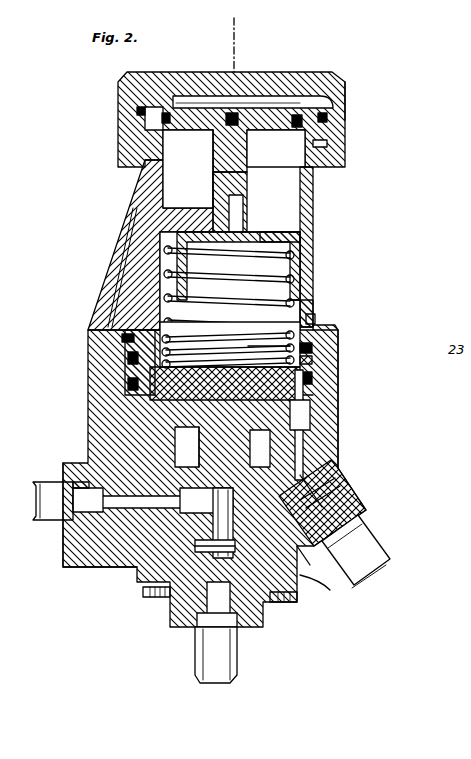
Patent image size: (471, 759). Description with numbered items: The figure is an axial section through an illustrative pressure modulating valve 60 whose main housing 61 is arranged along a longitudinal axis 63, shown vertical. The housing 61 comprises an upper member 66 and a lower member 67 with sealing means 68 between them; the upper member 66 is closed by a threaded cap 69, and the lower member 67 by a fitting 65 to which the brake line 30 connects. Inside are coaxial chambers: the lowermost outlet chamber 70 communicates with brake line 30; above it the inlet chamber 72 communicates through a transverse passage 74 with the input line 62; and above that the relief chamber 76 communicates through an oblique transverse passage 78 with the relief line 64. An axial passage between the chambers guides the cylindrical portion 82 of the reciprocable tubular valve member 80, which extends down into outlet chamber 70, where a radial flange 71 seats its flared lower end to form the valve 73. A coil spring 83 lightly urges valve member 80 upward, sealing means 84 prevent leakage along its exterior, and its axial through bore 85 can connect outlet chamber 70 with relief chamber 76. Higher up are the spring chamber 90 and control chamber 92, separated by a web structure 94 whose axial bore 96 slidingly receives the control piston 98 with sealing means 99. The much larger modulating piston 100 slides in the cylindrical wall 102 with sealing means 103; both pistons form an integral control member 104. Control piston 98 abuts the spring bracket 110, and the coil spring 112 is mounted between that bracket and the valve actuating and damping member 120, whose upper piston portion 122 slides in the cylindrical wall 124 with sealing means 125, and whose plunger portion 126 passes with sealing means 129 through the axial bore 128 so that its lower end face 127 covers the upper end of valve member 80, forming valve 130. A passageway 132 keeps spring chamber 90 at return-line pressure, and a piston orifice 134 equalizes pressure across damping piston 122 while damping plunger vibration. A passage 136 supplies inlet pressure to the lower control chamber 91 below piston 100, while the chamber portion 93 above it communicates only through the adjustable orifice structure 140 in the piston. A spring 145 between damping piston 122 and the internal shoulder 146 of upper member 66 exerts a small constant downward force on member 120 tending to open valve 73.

The brake line 30 is at (236, 654).
The pressure modulating valve 60 is at (349, 288).
The main housing 61 is at (347, 408).
The input line 62 is at (60, 480).
The longitudinal axis 63 is at (238, 50).
The relief line 64 is at (378, 556).
The fitting 65 is at (172, 612).
The upper primary portion 66 is at (302, 266).
The lower primary portion 67 is at (338, 424).
The sealing means 68 is at (340, 331).
The threaded cap 69 is at (346, 90).
The outlet chamber 70 is at (312, 594).
The radial flange 71 is at (326, 587).
The inlet chamber 72 is at (352, 516).
The valve 73 is at (300, 565).
The transverse passage 74 is at (104, 568).
The relief chamber 76 is at (300, 452).
The oblique transverse passage 78 is at (338, 488).
The valve member 80 is at (244, 520).
The cylindrical portion 82 is at (182, 520).
The coil spring 83 is at (250, 615).
The sealing means 84 is at (324, 472).
The axial through bore 85 is at (192, 551).
The spring chamber 90 is at (292, 308).
The lower control chamber 91 is at (165, 178).
The control chamber 92 is at (162, 163).
The chamber portion 93 is at (234, 96).
The web structure 94 is at (314, 200).
The axial through bore 96 is at (256, 222).
The control piston 98 is at (213, 182).
The sealing means 99 is at (249, 186).
The modulating piston 100 is at (304, 84).
The cylindrical wall 102 is at (320, 146).
The sealing means 103 is at (346, 102).
The integral control member 104 is at (212, 158).
The spring bracket 110 is at (300, 238).
The compressible coil spring 112 is at (314, 306).
The valve actuating and damping member 120 is at (214, 350).
The upper piston portion 122 is at (160, 388).
The cylindrical wall 124 is at (314, 350).
The sealing means 125 is at (314, 382).
The plunger portion 126 is at (171, 433).
The lower end face 127 is at (221, 447).
The axial bore 128 is at (225, 392).
The sealing means 129 is at (271, 437).
The valve 130 is at (143, 484).
The passageway 132 is at (304, 440).
The piston orifice 134 is at (316, 394).
The passage 136 is at (112, 270).
The orifice structure 140 is at (262, 100).
The spring 145 is at (314, 362).
The internal shoulder 146 is at (258, 346).